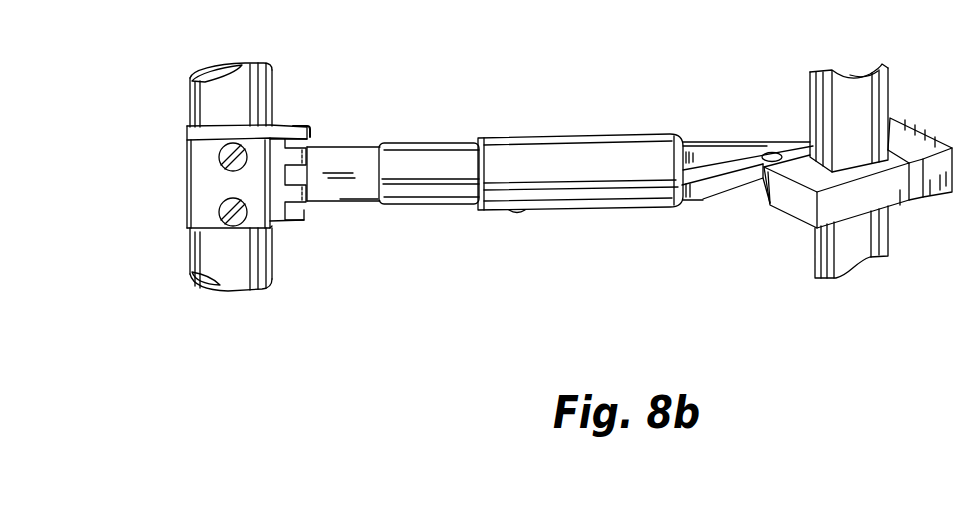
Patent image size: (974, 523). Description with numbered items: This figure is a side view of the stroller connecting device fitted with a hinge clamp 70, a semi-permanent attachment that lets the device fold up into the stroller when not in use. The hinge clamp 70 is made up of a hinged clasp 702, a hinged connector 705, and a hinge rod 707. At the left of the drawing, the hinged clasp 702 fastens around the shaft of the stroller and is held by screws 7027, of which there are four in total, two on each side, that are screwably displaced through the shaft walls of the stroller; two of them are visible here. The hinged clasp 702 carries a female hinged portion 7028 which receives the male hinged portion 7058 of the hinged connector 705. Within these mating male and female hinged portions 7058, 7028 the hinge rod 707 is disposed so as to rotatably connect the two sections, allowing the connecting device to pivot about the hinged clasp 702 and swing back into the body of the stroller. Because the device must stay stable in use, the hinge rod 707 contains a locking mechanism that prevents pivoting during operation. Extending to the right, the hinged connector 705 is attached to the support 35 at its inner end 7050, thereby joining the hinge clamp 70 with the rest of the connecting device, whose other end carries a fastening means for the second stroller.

The hinge clamp 70 is at (227, 189).
The hinged clasp 702 is at (189, 135).
The screws 7027 is at (220, 157).
The female hinged portion 7028 is at (305, 222).
The hinge rod 707 is at (297, 127).
The support 35 is at (629, 196).
The hinged connector 705 is at (399, 153).
The male hinged portion 7058 is at (307, 150).
The inner end 7050 is at (383, 227).